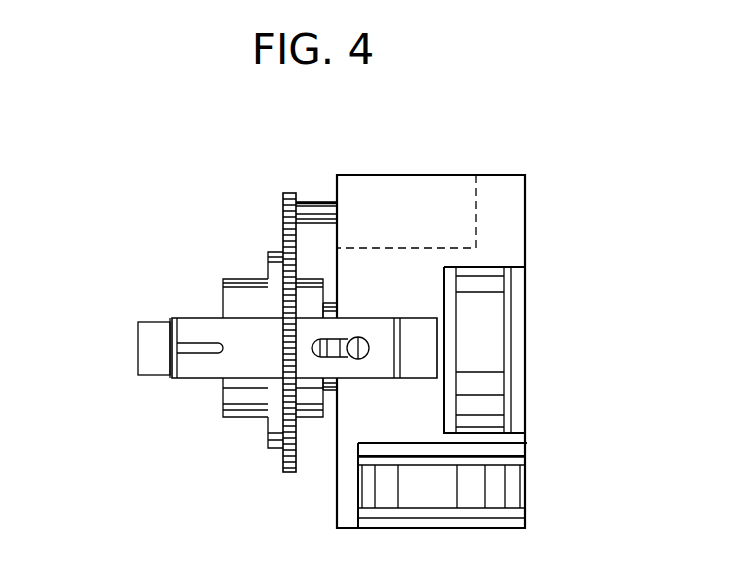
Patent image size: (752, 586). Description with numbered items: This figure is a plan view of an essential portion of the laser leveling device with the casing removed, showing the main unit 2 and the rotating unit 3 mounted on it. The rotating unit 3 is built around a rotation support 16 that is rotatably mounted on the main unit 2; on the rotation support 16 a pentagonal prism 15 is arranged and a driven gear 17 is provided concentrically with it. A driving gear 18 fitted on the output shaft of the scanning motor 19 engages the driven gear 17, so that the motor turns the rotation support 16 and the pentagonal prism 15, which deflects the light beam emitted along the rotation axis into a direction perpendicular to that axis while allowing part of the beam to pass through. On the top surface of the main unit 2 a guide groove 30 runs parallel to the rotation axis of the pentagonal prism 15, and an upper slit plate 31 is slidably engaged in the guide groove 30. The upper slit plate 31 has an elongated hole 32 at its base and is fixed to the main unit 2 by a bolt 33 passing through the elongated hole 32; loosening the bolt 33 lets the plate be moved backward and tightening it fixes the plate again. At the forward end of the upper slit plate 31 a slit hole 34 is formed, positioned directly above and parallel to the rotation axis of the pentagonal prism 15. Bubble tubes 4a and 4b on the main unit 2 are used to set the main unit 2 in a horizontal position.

The main unit 2 is at (527, 222).
The rotating unit 3 is at (157, 380).
The bubble tube 4a is at (495, 318).
The bubble tube 4b is at (468, 500).
The pentagonal prism 15 is at (150, 327).
The rotation support 16 is at (238, 417).
The driven gear 17 is at (283, 458).
The driving gear 18 is at (290, 190).
The scanning motor 19 is at (455, 188).
The guide groove 30 is at (414, 330).
The upper slit plate 31 is at (248, 323).
The elongated hole 32 is at (330, 357).
The bolt 33 is at (358, 337).
The slit hole 34 is at (197, 343).